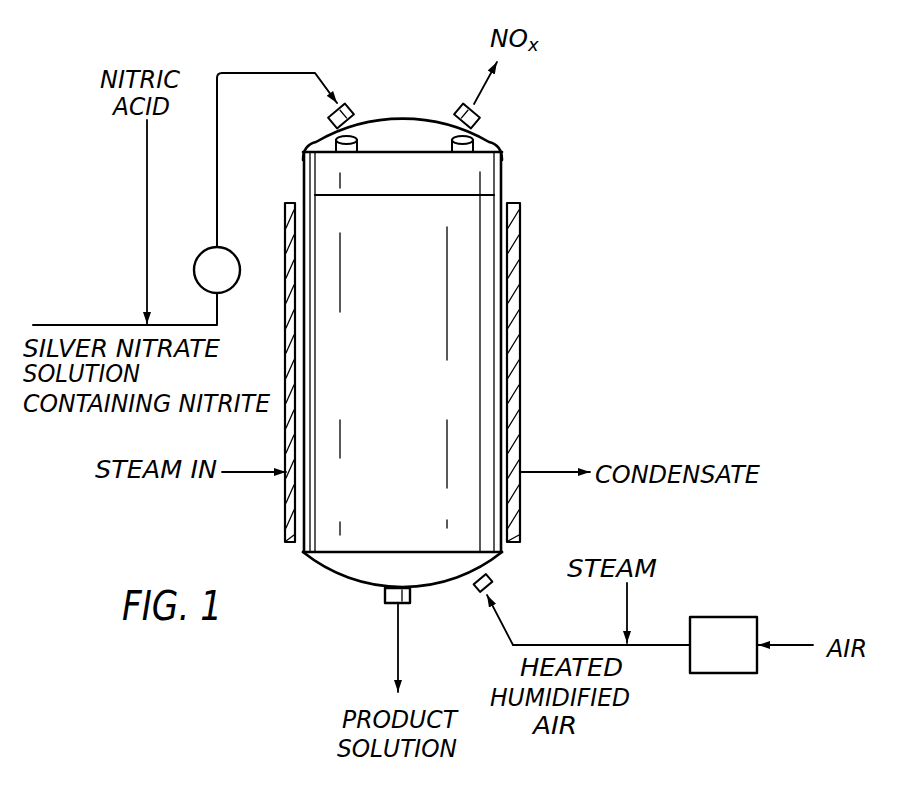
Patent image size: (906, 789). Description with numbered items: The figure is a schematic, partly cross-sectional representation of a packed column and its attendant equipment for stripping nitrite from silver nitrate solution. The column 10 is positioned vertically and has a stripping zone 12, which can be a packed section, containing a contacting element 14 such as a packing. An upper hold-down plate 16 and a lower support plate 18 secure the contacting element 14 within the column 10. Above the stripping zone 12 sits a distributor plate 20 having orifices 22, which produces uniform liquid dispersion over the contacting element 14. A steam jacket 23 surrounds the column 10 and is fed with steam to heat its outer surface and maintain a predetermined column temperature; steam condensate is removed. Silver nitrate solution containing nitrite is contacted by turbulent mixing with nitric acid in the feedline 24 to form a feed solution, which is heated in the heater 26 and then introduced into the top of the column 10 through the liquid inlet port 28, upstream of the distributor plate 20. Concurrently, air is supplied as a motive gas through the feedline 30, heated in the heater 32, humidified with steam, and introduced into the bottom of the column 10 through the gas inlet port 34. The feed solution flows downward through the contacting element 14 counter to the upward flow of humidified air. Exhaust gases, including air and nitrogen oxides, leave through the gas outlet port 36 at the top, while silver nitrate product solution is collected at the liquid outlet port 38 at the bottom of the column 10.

The column 10 is at (552, 102).
The stripping zone 12 is at (501, 194).
The contacting element 14 is at (481, 197).
The upper hold-down plate 16 is at (332, 195).
The lower support plate 18 is at (330, 570).
The distributor plate 20 is at (337, 146).
The orifices 22 is at (360, 130).
The steam jacket 23 is at (523, 262).
The feedline 24 is at (182, 323).
The heater 26 is at (200, 258).
The liquid inlet port 28 is at (355, 114).
The feedline 30 is at (790, 645).
The heater 32 is at (728, 617).
The gas inlet port 34 is at (492, 579).
The gas outlet port 36 is at (480, 112).
The liquid outlet port 38 is at (385, 597).